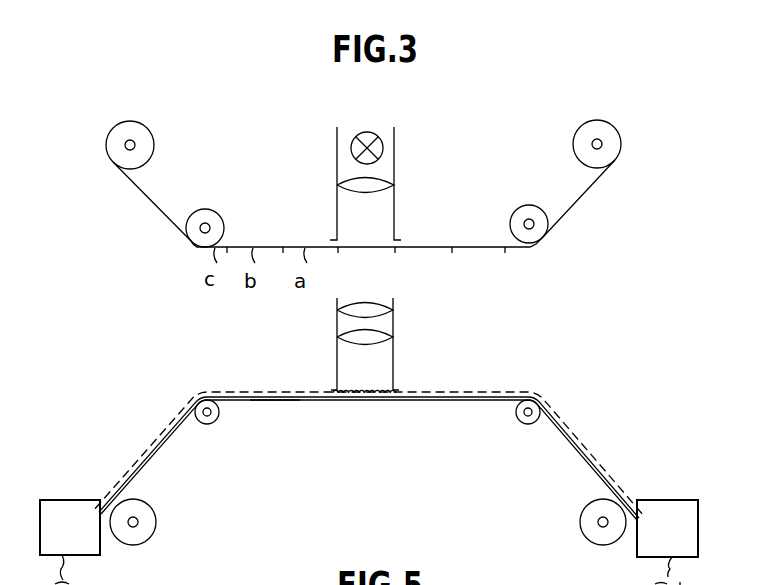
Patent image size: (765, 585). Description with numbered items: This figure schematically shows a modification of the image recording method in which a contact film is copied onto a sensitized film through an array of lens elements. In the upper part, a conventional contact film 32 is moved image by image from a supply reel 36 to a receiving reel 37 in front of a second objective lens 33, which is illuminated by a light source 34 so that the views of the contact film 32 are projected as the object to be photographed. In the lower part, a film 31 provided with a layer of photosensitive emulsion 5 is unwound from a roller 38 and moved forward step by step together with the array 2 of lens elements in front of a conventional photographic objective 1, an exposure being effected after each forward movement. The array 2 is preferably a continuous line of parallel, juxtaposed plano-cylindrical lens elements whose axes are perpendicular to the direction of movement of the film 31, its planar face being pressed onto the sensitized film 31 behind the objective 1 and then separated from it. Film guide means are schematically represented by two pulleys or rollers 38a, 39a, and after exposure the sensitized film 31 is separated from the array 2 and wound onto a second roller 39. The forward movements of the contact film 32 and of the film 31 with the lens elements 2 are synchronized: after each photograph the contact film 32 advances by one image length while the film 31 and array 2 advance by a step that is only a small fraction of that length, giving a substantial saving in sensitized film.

The photographic objective 1 is at (394, 327).
The array of lens elements 2 is at (472, 385).
The photosensitive emulsion layer 5 is at (262, 403).
The film 31 is at (152, 465).
The contact film 32 is at (580, 200).
The second objective lens 33 is at (345, 180).
The light source 34 is at (383, 148).
The supply reel 36 is at (108, 140).
The receiving reel 37 is at (621, 144).
The roller 38 is at (150, 534).
The film guide roller 38a is at (212, 424).
The second roller 39 is at (587, 528).
The film guide roller 39a is at (523, 424).